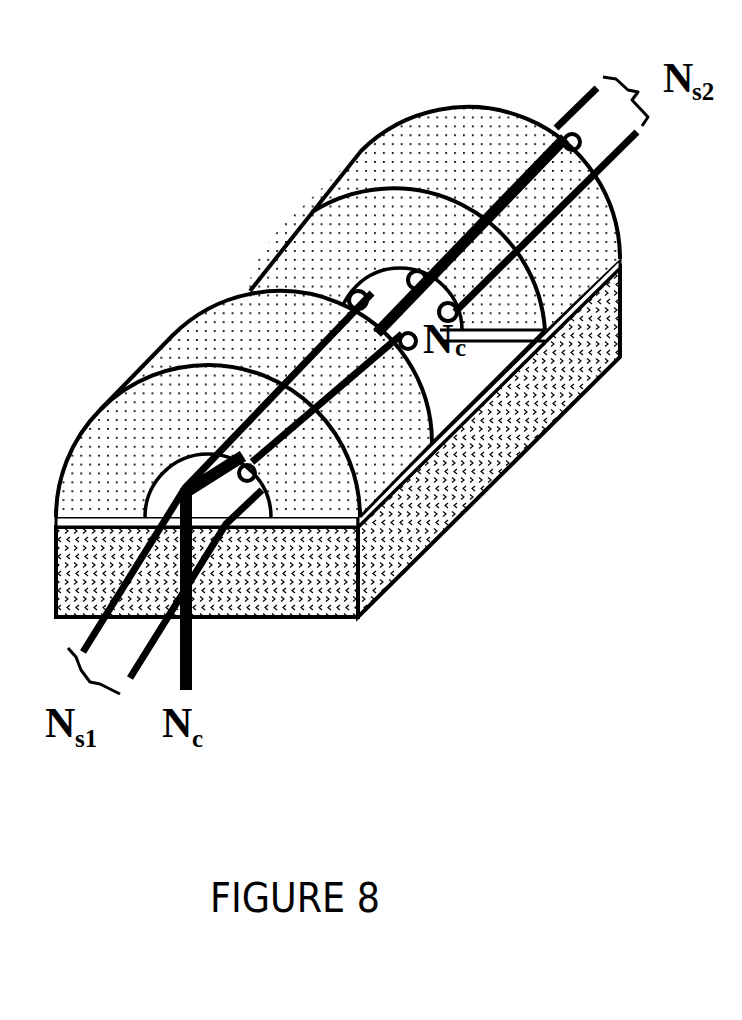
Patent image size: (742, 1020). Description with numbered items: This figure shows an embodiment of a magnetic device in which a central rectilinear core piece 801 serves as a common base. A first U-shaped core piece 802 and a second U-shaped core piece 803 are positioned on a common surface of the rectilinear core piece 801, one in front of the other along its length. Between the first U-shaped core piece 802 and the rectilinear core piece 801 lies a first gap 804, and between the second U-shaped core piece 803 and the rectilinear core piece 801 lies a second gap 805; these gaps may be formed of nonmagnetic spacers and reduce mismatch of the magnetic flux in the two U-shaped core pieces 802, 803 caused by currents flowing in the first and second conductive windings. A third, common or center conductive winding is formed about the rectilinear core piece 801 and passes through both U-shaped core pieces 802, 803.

The rectilinear core piece 801 is at (316, 597).
The first U-shaped core piece 802 is at (392, 431).
The second U-shaped core piece 803 is at (467, 157).
The first gap 804 is at (418, 467).
The second gap 805 is at (632, 267).